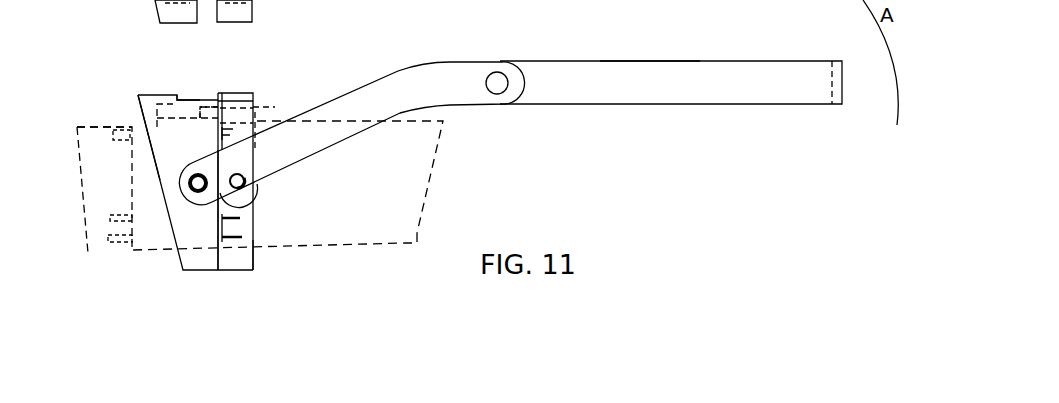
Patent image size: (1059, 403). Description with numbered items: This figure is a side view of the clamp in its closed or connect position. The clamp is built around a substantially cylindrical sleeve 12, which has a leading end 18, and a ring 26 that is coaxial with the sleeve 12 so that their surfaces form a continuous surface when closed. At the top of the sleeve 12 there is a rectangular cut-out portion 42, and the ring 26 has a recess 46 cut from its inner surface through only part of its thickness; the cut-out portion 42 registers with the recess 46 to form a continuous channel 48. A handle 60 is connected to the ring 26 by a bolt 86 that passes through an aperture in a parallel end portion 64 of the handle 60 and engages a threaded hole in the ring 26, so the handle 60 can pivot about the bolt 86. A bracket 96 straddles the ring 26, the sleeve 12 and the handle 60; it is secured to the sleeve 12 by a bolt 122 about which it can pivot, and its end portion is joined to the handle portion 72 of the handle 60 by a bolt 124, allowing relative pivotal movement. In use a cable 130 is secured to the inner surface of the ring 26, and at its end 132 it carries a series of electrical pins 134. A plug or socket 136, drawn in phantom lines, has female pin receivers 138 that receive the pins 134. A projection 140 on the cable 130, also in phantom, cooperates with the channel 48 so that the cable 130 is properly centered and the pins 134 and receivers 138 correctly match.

The sleeve 12 is at (193, 272).
The leading end 18 is at (138, 108).
The ring 26 is at (247, 272).
The cut-out portion 42 is at (179, 98).
The recess 46 is at (254, 99).
The channel 48 is at (193, 110).
The handle 60 is at (733, 46).
The parallel end portion 64 is at (260, 188).
The handle portion 72 is at (644, 68).
The bolt 86 is at (253, 186).
The bracket 96 is at (416, 68).
The bolt 122 is at (191, 190).
The bolt 124 is at (497, 72).
The cable 130 is at (402, 236).
The end 132 is at (222, 221).
The pins 134 is at (225, 220).
The plug or socket 136 is at (103, 125).
The female pin receivers 138 is at (112, 243).
The projection 140 is at (270, 114).